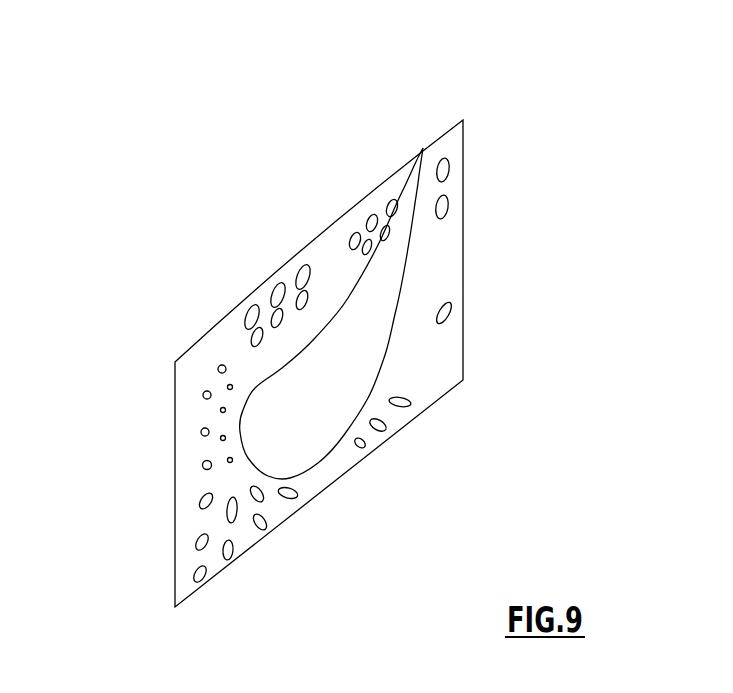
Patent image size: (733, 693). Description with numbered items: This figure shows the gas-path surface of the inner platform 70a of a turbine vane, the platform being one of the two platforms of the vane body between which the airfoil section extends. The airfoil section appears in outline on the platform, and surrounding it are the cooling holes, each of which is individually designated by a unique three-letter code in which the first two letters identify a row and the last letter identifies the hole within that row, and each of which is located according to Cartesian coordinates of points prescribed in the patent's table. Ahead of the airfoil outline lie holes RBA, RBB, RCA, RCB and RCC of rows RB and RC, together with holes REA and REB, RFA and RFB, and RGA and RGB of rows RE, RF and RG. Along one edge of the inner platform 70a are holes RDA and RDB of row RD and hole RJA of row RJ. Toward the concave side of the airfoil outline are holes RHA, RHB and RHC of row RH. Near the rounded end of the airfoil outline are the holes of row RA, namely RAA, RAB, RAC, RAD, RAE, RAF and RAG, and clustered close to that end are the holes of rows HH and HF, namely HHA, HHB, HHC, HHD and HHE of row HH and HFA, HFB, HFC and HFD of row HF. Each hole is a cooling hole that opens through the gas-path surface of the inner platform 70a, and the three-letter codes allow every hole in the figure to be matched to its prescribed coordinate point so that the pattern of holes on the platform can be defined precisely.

The inner platform 70a is at (433, 363).
The cooling hole RCA is at (285, 139).
The cooling hole REB is at (252, 179).
The cooling hole REA is at (243, 209).
The cooling hole RFB is at (225, 228).
The cooling hole RFA is at (216, 259).
The cooling hole RGB is at (200, 280).
The cooling hole RGA is at (196, 309).
The cooling hole RBA is at (342, 131).
The cooling hole RCB is at (380, 133).
The cooling hole RBB is at (419, 152).
The cooling hole RCC is at (456, 154).
The cooling hole RDB is at (523, 185).
The cooling hole RDA is at (523, 228).
The cooling hole RJA is at (523, 327).
The cooling hole RHC is at (496, 419).
The cooling hole RHB is at (473, 447).
The cooling hole RHA is at (452, 474).
The cooling hole RAG is at (385, 517).
The cooling hole RAF is at (356, 534).
The cooling hole RAE is at (319, 560).
The cooling hole RAD is at (292, 574).
The cooling hole RAC is at (190, 595).
The cooling hole HHA is at (129, 328).
The cooling hole HFA is at (145, 352).
The cooling hole HHB is at (121, 374).
The cooling hole HFB is at (142, 399).
The cooling hole HHC is at (120, 433).
The cooling hole HFC is at (139, 459).
The cooling hole HFD is at (166, 481).
The cooling hole HHD is at (127, 500).
The cooling hole HHE is at (131, 534).
The cooling hole RAB is at (131, 574).
The cooling hole RAA is at (131, 610).